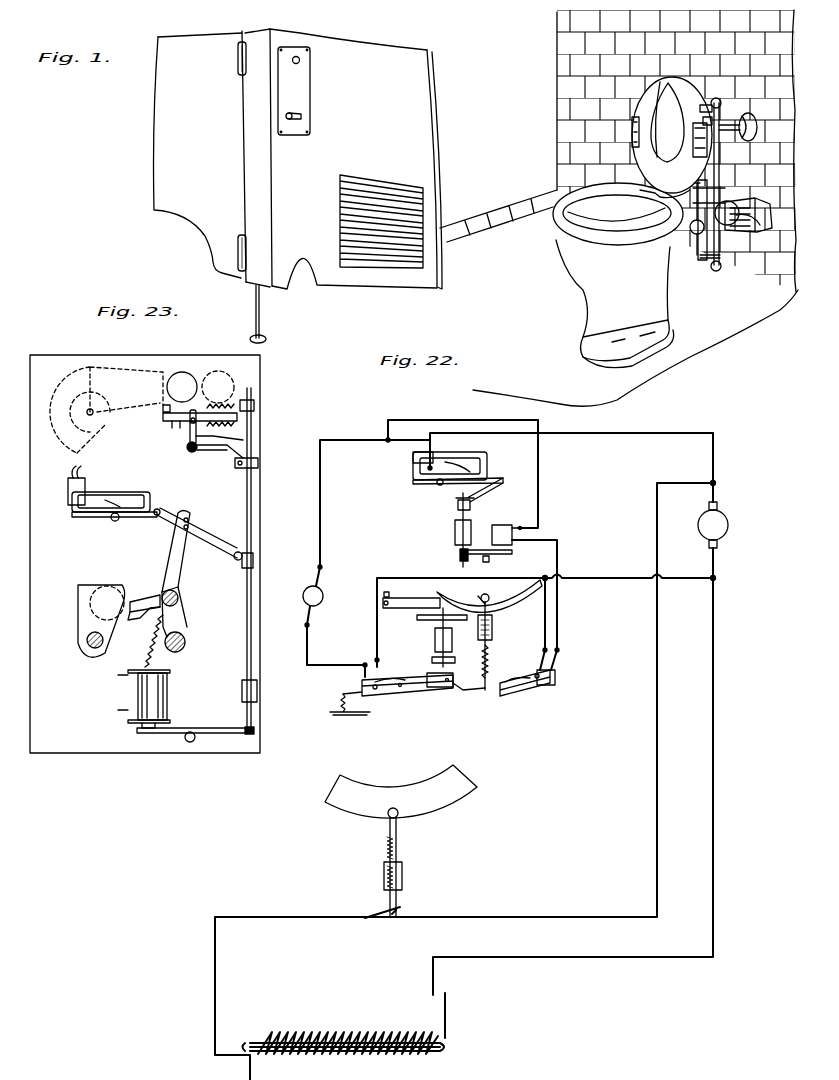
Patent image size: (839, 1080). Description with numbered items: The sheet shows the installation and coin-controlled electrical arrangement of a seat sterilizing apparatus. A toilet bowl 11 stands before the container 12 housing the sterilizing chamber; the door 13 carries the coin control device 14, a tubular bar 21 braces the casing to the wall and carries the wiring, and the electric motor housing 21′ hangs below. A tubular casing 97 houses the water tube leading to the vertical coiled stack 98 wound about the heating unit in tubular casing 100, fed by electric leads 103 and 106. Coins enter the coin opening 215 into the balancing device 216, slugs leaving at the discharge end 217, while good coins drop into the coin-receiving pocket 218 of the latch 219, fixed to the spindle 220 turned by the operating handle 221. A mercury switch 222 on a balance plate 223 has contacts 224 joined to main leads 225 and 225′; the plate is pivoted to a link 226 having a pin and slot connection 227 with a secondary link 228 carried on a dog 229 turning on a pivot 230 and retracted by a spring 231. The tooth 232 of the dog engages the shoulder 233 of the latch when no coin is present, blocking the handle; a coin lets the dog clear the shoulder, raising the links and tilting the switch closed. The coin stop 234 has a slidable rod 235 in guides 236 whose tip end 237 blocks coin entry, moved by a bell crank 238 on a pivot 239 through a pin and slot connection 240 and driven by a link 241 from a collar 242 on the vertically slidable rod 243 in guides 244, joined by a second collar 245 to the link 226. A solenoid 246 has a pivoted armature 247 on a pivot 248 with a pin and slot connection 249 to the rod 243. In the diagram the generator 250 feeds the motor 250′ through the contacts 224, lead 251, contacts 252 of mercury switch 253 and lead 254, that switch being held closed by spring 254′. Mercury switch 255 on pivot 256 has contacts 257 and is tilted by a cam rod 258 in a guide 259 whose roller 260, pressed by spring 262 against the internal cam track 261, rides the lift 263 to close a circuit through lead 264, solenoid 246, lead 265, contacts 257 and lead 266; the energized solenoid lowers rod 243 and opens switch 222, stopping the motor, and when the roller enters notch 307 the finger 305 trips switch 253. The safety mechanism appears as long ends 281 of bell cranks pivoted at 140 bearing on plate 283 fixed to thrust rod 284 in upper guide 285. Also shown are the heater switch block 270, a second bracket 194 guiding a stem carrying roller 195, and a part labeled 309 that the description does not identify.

In FIG. 1, the toilet bowl 11 is at (602, 287).
In FIG. 1, the container 12 is at (624, 110).
In FIG. 1, the door 13 is at (421, 118).
In FIG. 1, the coin control device 14 is at (303, 98).
In FIG. 1, the tubular bar 21 is at (744, 140).
In FIG. 1, the electric motor housing 21′ is at (761, 236).
In FIG. 1, the tubular casing 97 is at (703, 245).
In FIG. 22, the vertical coiled stack 98 is at (262, 1078).
In FIG. 1, the tubular casing 100 is at (740, 190).
In FIG. 22, the electric lead 103 is at (312, 900).
In FIG. 22, the lead 106 is at (503, 945).
In FIG. 22, the pivot 140 is at (387, 608).
In FIG. 22, the second bracket 194 is at (405, 878).
In FIG. 22, the roller 195 is at (400, 818).
In FIG. 23, the coin opening 215 is at (220, 372).
In FIG. 23, the balancing device 216 is at (110, 373).
In FIG. 23, the discharge end 217 is at (70, 428).
In FIG. 23, the coin-receiving pocket 218 is at (108, 595).
In FIG. 23, the latch 219 is at (87, 617).
In FIG. 23, the spindle 220 is at (92, 648).
In FIG. 1, the operating handle 221 is at (291, 122).
In FIG. 23, the mercury switch 222 is at (94, 526).
In FIG. 22, the mercury switch 222 is at (430, 490).
In FIG. 23, the balance plate 223 is at (116, 521).
In FIG. 22, the balance plate 223 is at (445, 487).
In FIG. 23, the contacts 224 is at (72, 505).
In FIG. 22, the contacts 224 is at (414, 478).
In FIG. 23, the main lead 225 is at (68, 490).
In FIG. 22, the main lead 225 is at (320, 540).
In FIG. 23, the main lead 225′ is at (82, 462).
In FIG. 22, the main lead 225′ is at (463, 438).
In FIG. 23, the link 226 is at (208, 537).
In FIG. 22, the link 226 is at (485, 490).
In FIG. 23, the pin and slot connection 227 is at (175, 522).
In FIG. 23, the secondary link 228 is at (180, 563).
In FIG. 23, the dog 229 is at (183, 625).
In FIG. 23, the pivot 230 is at (180, 653).
In FIG. 23, the spring 231 is at (142, 648).
In FIG. 23, the tooth 232 is at (141, 621).
In FIG. 23, the shoulder 233 is at (123, 595).
In FIG. 23, the coin stop 234 is at (172, 431).
In FIG. 23, the slidable rod 235 is at (189, 451).
In FIG. 23, the guides 236 is at (230, 407).
In FIG. 23, the tip end 237 is at (163, 403).
In FIG. 23, the bell crank 238 is at (235, 455).
In FIG. 23, the pivot 239 is at (220, 452).
In FIG. 23, the pin and slot connection 240 is at (193, 408).
In FIG. 23, the link 241 is at (236, 441).
In FIG. 23, the collar 242 is at (262, 462).
In FIG. 23, the vertically slidable rod 243 is at (260, 497).
In FIG. 23, the guides 244 is at (272, 684).
In FIG. 23, the second collar 245 is at (245, 567).
In FIG. 23, the solenoid 246 is at (145, 702).
In FIG. 22, the solenoid 246 is at (505, 518).
In FIG. 23, the pivoted armature 247 is at (170, 733).
In FIG. 22, the pivoted armature 247 is at (514, 552).
In FIG. 23, the pivot 248 is at (195, 738).
In FIG. 22, the pivot 248 is at (479, 566).
In FIG. 23, the pin and slot connection 249 is at (254, 731).
In FIG. 22, the pin and slot connection 249 is at (454, 560).
In FIG. 22, the generator 250 is at (728, 522).
In FIG. 22, the motor 250′ is at (323, 591).
In FIG. 22, the lead 251 is at (325, 667).
In FIG. 22, the contacts 252 is at (376, 700).
In FIG. 22, the mercury switch 253 is at (400, 694).
In FIG. 22, the lead 254 is at (645, 580).
In FIG. 22, the spring 254′ is at (343, 716).
In FIG. 22, the mercury switch 255 is at (536, 699).
In FIG. 22, the pivot 256 is at (516, 692).
In FIG. 22, the contacts 257 is at (556, 692).
In FIG. 22, the cam rod 258 is at (497, 652).
In FIG. 22, the guide 259 is at (493, 622).
In FIG. 22, the roller 260 is at (492, 588).
In FIG. 22, the internal cam track 261 is at (510, 592).
In FIG. 22, the spring 262 is at (483, 664).
In FIG. 22, the lift 263 is at (478, 603).
In FIG. 22, the lead 264 is at (495, 412).
In FIG. 22, the lead 265 is at (560, 630).
In FIG. 22, the lead 266 is at (538, 625).
In FIG. 22, the switch block 270 is at (405, 905).
In FIG. 22, the long ends 281 is at (415, 596).
In FIG. 22, the plate 283 is at (428, 621).
In FIG. 22, the thrust rod 284 is at (456, 660).
In FIG. 22, the upper guide 285 is at (452, 638).
In FIG. 22, the finger 305 is at (468, 692).
In FIG. 22, the notch 307 is at (549, 576).
In FIG. 22, the contact block 309 is at (443, 690).